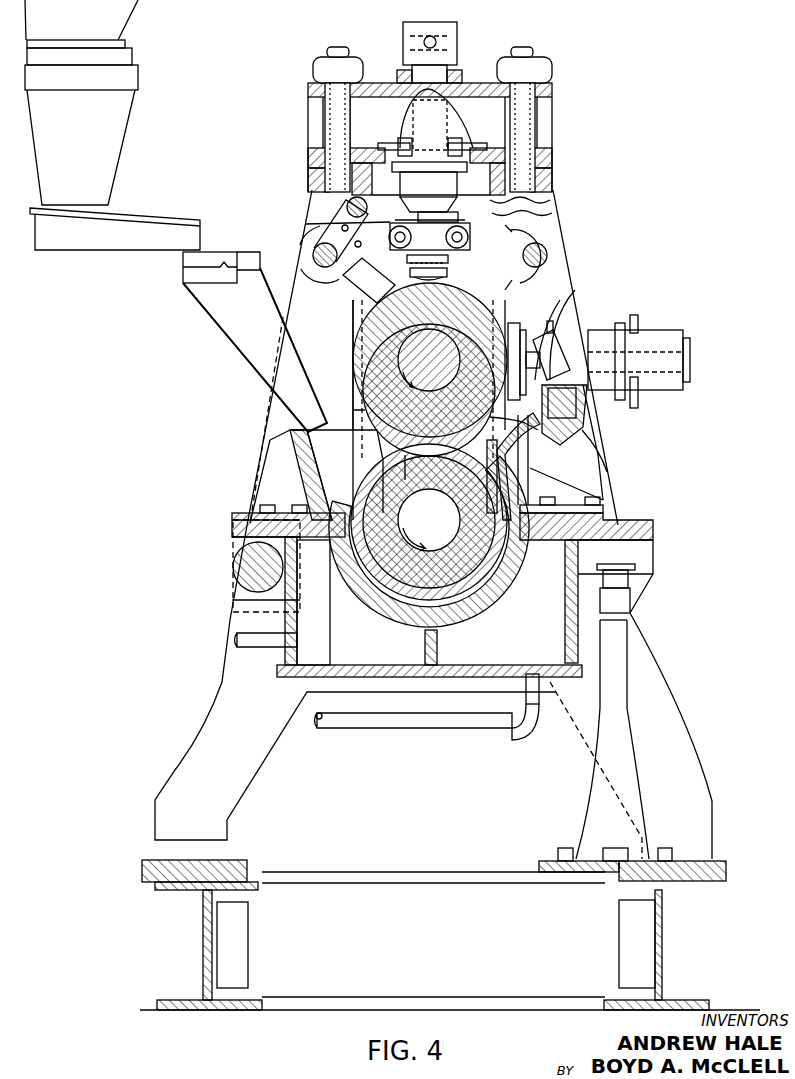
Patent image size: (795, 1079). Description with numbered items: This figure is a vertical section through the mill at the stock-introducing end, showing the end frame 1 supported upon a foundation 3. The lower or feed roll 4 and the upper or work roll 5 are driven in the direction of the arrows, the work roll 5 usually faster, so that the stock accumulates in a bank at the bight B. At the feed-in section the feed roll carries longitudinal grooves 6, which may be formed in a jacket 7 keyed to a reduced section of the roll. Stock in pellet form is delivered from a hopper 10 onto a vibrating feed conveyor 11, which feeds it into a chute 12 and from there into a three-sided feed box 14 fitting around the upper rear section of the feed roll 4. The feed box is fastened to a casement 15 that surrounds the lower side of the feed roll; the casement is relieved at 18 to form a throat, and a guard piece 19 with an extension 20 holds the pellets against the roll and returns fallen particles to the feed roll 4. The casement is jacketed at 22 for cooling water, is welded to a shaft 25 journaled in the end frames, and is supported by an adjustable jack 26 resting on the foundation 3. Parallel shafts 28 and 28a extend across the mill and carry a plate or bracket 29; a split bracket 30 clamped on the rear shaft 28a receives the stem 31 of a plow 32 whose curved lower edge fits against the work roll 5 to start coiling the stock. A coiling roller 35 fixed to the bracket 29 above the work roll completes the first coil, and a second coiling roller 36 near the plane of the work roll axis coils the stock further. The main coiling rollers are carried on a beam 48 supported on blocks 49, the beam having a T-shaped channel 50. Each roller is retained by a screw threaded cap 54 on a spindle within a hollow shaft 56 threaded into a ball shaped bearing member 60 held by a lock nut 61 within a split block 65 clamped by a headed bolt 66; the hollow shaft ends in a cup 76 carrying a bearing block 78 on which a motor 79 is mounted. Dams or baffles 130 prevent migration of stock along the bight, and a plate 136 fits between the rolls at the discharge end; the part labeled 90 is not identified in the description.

The end frame 1 is at (553, 212).
The foundation 3 is at (720, 861).
The feed roll 4 is at (297, 443).
The work roll 5 is at (357, 347).
The longitudinal grooves 6 is at (470, 446).
The jacket 7 is at (358, 483).
The hopper 10 is at (110, 140).
The feed conveyor 11 is at (168, 218).
The chute 12 is at (240, 342).
The feed box 14 is at (311, 475).
The casement 15 is at (520, 578).
The relieved portion 18 is at (335, 553).
The guard piece 19 is at (605, 507).
The extension 20 is at (525, 445).
The jacket 22 is at (450, 672).
The shaft 25 is at (240, 582).
The jack 26 is at (633, 775).
The shaft 28 is at (548, 256).
The shaft 28a is at (330, 272).
The plate or bracket 29 is at (542, 236).
The bracket 30 is at (330, 238).
The stem 31 is at (345, 205).
The plow 32 is at (368, 295).
The coiling roller 35 is at (449, 274).
The second coiling roller 36 is at (512, 326).
The beam 48 is at (585, 420).
The blocks 49 is at (608, 472).
The T-shaped channel 50 is at (580, 400).
The screw threaded cap 54 is at (450, 259).
The hollow shaft 56 is at (318, 240).
The ball shaped bearing member 60 is at (556, 328).
The lock nut 61 is at (433, 225).
The split block 65 is at (472, 235).
The headed bolt 66 is at (555, 330).
The cup 76 is at (452, 205).
The bearing block 78 is at (455, 188).
The motor 79 is at (440, 125).
The plate 90 is at (360, 215).
The dams or baffles 130 is at (522, 470).
The plate 136 is at (448, 390).
The bight B is at (440, 452).